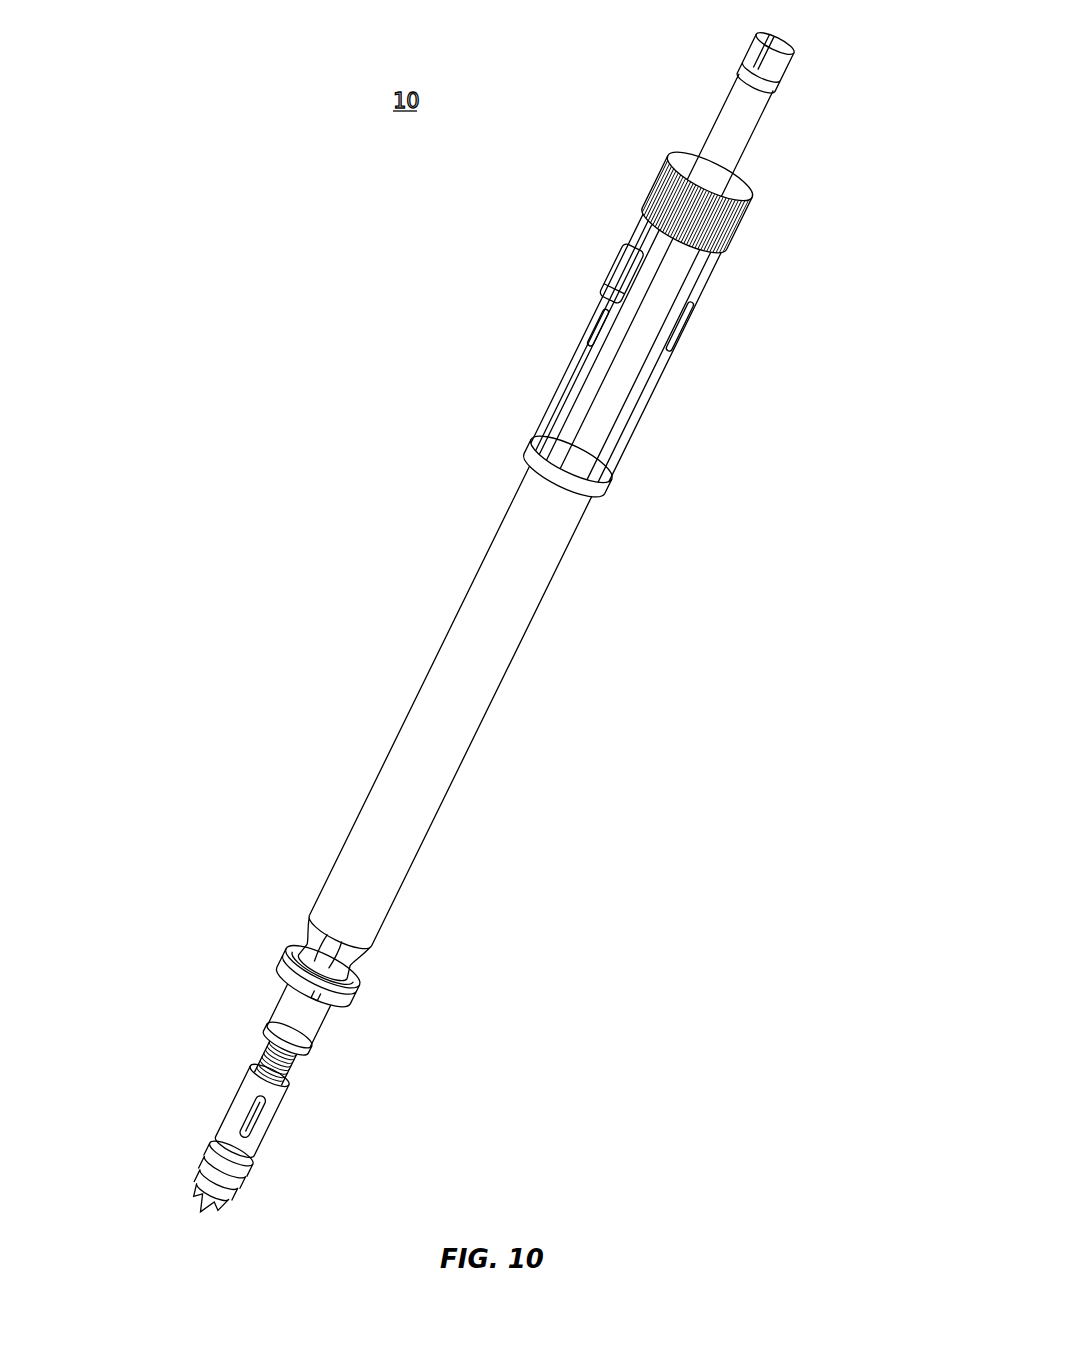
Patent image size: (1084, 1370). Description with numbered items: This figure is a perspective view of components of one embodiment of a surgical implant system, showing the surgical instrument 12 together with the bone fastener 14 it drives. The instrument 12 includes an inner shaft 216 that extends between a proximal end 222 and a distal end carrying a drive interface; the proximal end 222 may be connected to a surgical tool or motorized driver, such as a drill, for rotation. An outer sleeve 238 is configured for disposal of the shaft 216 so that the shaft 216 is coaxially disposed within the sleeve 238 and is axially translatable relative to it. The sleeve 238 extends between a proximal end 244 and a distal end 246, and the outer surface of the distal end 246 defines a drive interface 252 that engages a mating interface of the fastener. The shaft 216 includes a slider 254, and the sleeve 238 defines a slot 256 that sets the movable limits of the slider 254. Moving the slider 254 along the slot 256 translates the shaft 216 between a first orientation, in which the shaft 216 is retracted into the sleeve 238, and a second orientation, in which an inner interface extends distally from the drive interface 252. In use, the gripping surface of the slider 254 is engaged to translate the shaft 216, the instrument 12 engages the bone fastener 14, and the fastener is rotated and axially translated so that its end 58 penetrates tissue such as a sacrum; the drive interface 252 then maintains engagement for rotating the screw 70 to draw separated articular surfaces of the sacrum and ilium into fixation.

The surgical instrument 12 is at (330, 368).
The bone fastener 14 is at (226, 1141).
The end 58 is at (252, 1177).
The screw 70 is at (355, 997).
The inner shaft 216 is at (725, 127).
The proximal end 222 is at (778, 60).
The outer sleeve 238 is at (523, 583).
The proximal end 244 is at (690, 283).
The distal end 246 is at (383, 882).
The drive interface 252 is at (307, 937).
The slider 254 is at (622, 267).
The slot 256 is at (600, 327).